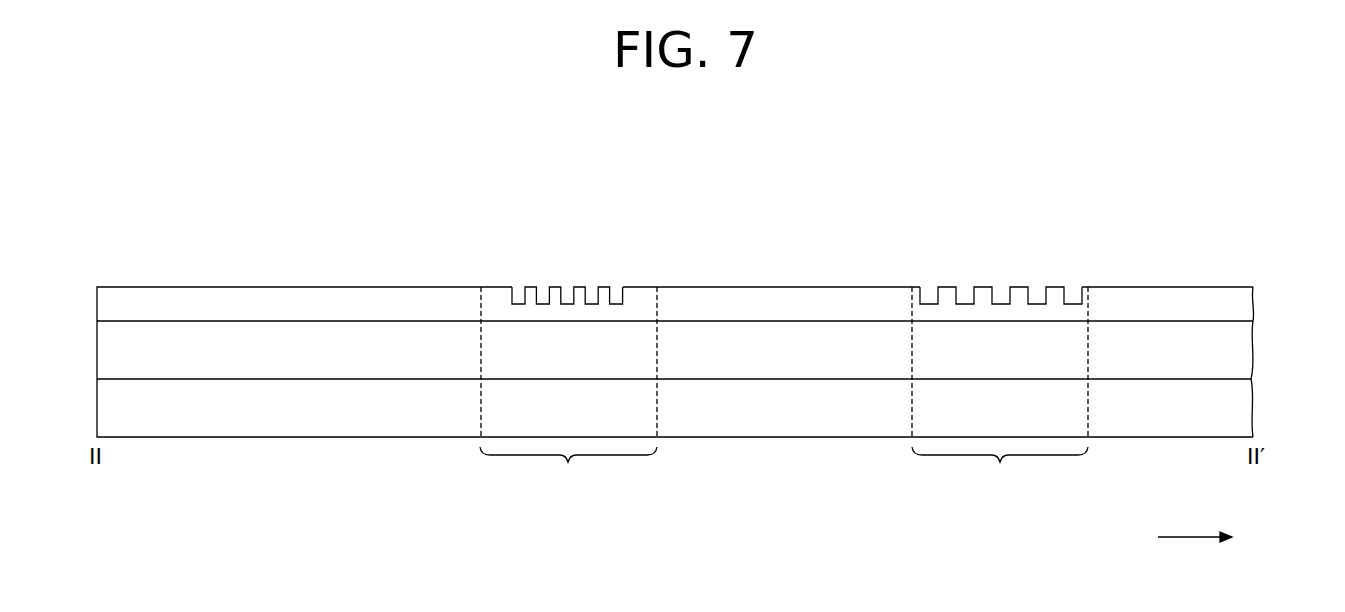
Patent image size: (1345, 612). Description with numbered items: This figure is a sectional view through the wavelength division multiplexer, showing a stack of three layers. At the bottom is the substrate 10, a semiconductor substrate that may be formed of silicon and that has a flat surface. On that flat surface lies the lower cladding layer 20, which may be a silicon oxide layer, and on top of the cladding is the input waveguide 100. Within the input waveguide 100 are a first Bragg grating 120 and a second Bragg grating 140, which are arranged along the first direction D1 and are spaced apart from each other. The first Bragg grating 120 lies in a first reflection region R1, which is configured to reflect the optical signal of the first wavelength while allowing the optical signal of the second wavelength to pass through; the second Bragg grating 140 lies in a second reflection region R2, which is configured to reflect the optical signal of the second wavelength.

The substrate 10 is at (1240, 405).
The lower cladding layer 20 is at (1240, 349).
The input waveguide 100 is at (713, 256).
The first Bragg grating 120 is at (567, 257).
The second Bragg grating 140 is at (999, 257).
The first reflection region R1 is at (568, 469).
The second reflection region R2 is at (1000, 469).
The first direction D1 is at (1208, 538).